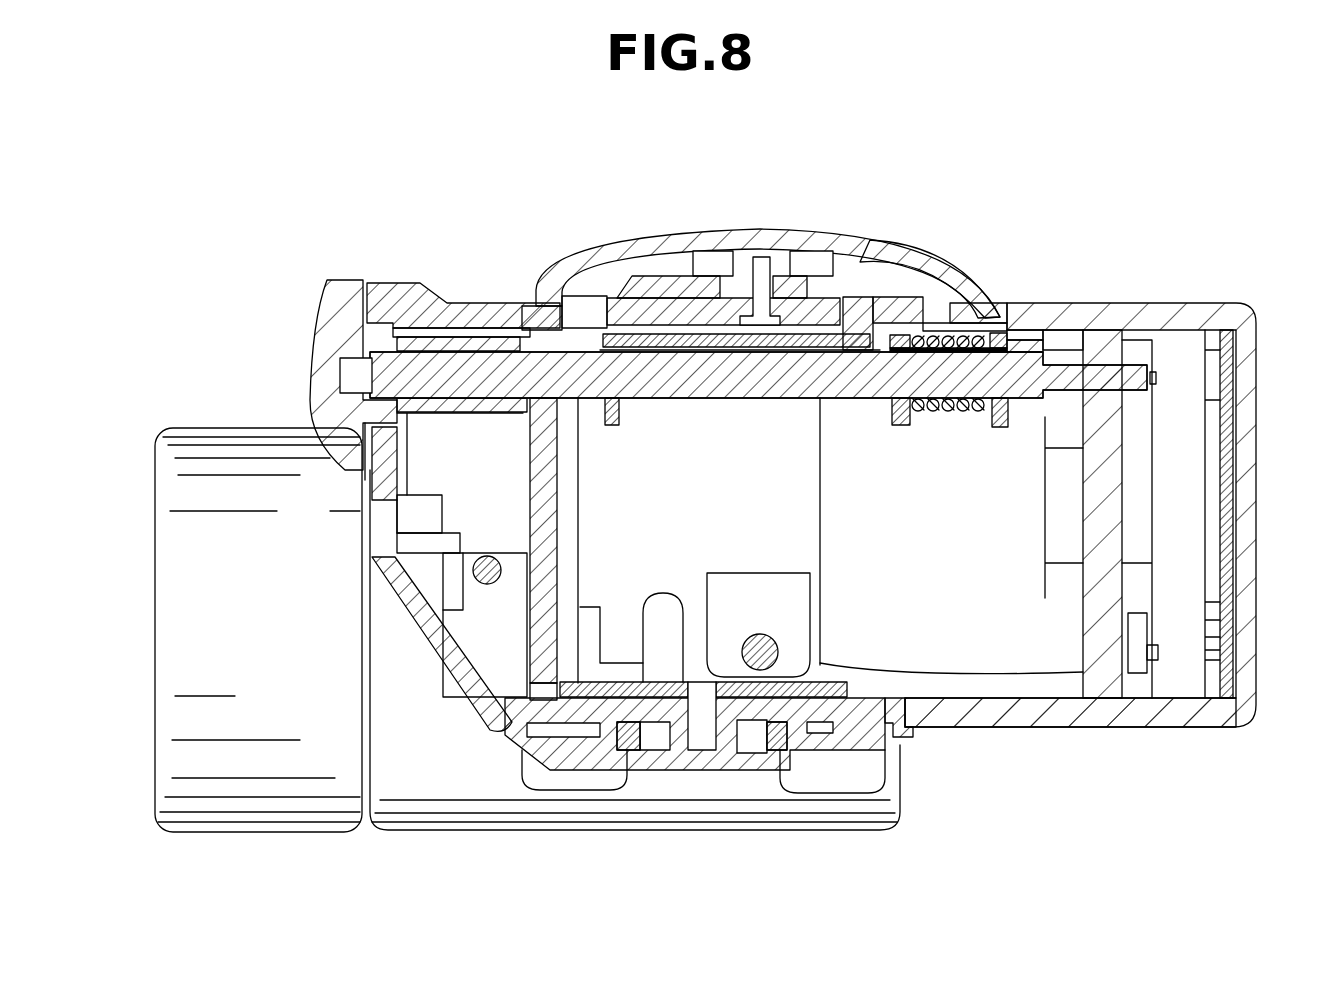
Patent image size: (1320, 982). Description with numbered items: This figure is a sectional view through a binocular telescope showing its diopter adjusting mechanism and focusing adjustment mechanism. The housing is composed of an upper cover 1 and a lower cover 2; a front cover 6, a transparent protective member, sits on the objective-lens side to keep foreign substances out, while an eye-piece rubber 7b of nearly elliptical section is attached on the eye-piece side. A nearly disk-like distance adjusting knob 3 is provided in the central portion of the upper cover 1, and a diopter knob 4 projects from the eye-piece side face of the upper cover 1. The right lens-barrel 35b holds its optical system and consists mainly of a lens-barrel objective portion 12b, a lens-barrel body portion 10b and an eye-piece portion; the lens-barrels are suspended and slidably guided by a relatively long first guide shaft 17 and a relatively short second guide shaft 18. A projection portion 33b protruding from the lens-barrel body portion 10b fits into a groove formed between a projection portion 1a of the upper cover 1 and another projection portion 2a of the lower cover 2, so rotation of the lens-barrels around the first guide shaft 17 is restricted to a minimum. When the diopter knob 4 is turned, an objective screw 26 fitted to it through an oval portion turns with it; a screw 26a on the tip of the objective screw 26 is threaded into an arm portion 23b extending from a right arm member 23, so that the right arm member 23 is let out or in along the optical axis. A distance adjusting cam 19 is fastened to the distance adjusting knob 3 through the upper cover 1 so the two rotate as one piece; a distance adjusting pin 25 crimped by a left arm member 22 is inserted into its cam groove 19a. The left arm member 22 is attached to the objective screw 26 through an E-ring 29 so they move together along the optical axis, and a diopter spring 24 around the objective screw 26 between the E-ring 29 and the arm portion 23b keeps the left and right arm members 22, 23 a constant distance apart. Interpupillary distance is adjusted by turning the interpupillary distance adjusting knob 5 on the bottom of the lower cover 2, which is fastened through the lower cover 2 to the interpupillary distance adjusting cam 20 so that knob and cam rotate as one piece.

The upper cover 1 is at (1227, 320).
The projection portion 1a is at (412, 512).
The lower cover 2 is at (1258, 700).
The projection portion 2a is at (385, 565).
The distance adjusting knob 3 is at (893, 250).
The diopter knob 4 is at (348, 278).
The interpupillary distance adjusting knob 5 is at (790, 757).
The front cover 6 is at (1233, 380).
The eye-piece rubber 7b is at (205, 790).
The lens-barrel body portion 10b is at (682, 508).
The lens-barrel objective portion 12b is at (893, 515).
The first guide shaft 17 is at (770, 640).
The second guide shaft 18 is at (493, 558).
The distance adjusting cam 19 is at (727, 317).
The cam groove 19a is at (840, 307).
The interpupillary distance adjusting cam 20 is at (922, 722).
The left arm member 22 is at (637, 340).
The right arm member 23 is at (1010, 345).
The arm portion 23b is at (1045, 392).
The diopter spring 24 is at (965, 330).
The distance adjusting pin 25 is at (925, 290).
The objective screw 26 is at (415, 375).
The screw 26a is at (1012, 420).
The E-ring 29 is at (963, 307).
The projection portion 33b is at (435, 535).
The lens-barrel 35b is at (1032, 648).